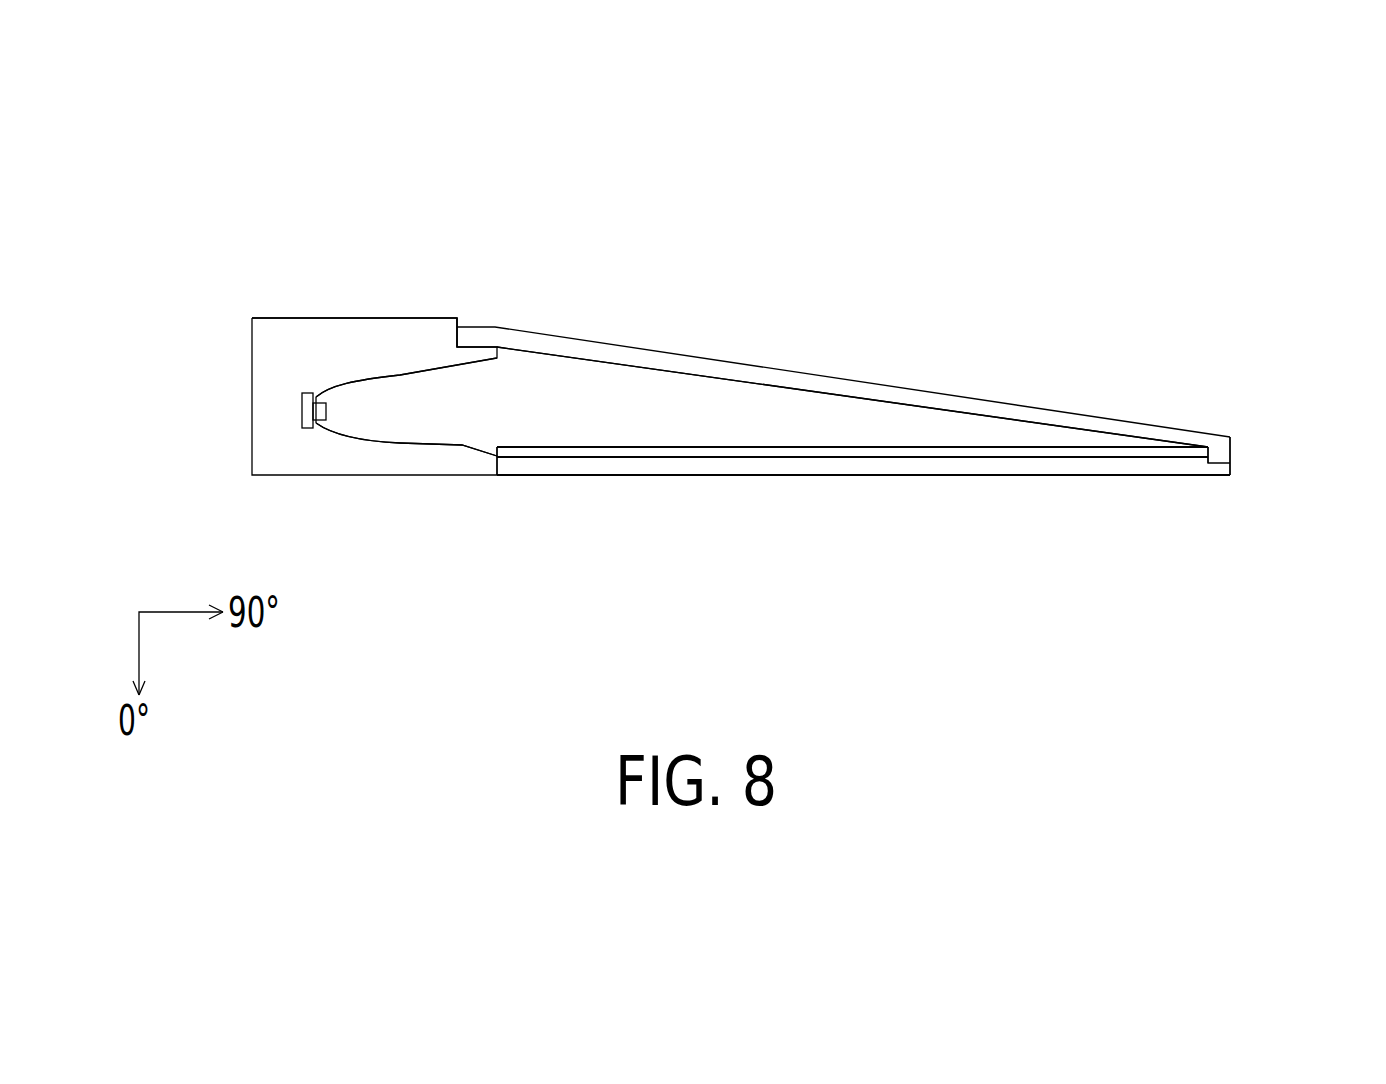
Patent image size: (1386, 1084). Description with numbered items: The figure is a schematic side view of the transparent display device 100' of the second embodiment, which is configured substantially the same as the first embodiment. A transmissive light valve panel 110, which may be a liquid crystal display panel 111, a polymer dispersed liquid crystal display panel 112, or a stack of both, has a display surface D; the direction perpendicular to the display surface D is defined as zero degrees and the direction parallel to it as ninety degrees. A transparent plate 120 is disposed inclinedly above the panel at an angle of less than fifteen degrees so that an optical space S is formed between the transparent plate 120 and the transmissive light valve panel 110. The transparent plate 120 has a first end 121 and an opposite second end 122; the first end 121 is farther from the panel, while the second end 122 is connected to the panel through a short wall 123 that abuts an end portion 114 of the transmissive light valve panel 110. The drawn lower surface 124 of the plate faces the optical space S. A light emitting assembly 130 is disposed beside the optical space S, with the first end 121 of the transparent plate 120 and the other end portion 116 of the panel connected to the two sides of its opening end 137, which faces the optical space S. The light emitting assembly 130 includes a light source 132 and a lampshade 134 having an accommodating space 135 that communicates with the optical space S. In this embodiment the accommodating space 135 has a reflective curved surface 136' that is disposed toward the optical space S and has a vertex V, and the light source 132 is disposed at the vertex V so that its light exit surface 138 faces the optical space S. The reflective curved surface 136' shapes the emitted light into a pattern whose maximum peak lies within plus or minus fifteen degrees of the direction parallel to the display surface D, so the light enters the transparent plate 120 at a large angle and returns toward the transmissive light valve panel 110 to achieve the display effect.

The transparent display device 100' is at (1184, 240).
The transmissive light valve panel 110 is at (1003, 587).
The liquid crystal display panel 111 is at (927, 463).
The polymer dispersed liquid crystal display panel 112 is at (965, 450).
The end portion 114 is at (1198, 463).
The end portion 116 is at (500, 463).
The transparent plate 120 is at (785, 378).
The first end 121 is at (458, 332).
The second end 122 is at (1230, 453).
The short wall 123 is at (1218, 460).
The lower surface of cover 124 is at (900, 405).
The light emitting assembly 130 is at (217, 400).
The light source 132 is at (302, 408).
The lampshade 134 is at (370, 327).
The accommodating space 135 is at (410, 417).
The reflective curved surface 136' is at (357, 302).
The opening end 137 is at (498, 407).
The light exit surface 138 is at (313, 430).
The vertex V is at (314, 383).
The optical space S is at (653, 422).
The display surface D is at (580, 477).